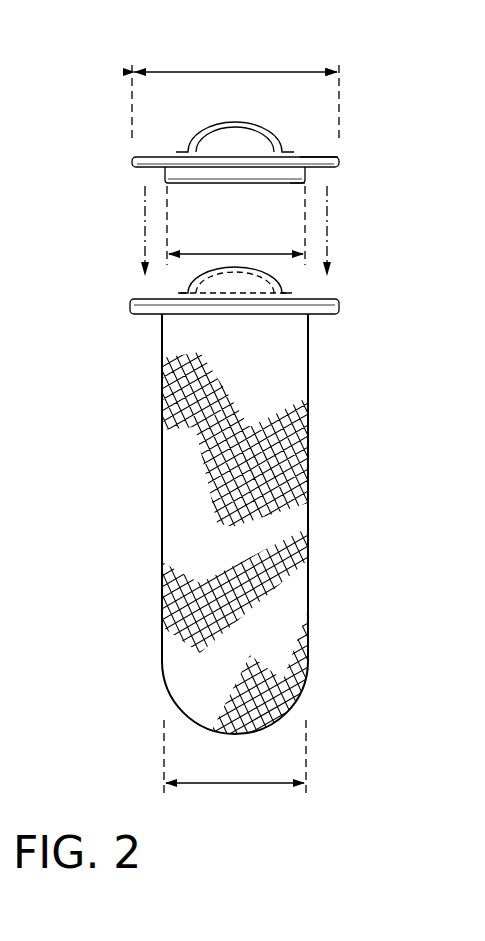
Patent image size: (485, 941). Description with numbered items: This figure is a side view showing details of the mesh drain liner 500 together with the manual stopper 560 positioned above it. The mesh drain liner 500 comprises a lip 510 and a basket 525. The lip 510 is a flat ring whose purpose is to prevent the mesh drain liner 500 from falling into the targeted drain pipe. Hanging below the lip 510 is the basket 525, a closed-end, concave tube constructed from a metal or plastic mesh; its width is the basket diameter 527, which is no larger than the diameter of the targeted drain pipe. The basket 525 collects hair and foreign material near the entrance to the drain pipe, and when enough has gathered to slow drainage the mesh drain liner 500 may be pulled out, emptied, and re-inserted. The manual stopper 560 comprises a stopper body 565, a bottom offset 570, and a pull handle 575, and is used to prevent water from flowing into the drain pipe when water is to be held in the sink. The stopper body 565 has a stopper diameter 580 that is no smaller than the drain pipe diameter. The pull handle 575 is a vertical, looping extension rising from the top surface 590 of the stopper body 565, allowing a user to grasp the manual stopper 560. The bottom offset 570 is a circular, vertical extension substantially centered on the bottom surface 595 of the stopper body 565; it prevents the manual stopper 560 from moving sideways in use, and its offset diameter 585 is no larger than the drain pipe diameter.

The mesh drain liner 500 is at (107, 715).
The lip 510 is at (339, 312).
The basket 525 is at (308, 682).
The basket diameter 527 is at (233, 784).
The manual stopper 560 is at (370, 117).
The stopper body 565 is at (132, 167).
The bottom offset 570 is at (165, 176).
The pull handle 575 is at (213, 127).
The stopper diameter 580 is at (222, 72).
The offset diameter 585 is at (243, 256).
The top surface 590 is at (316, 150).
The bottom surface 595 is at (316, 175).